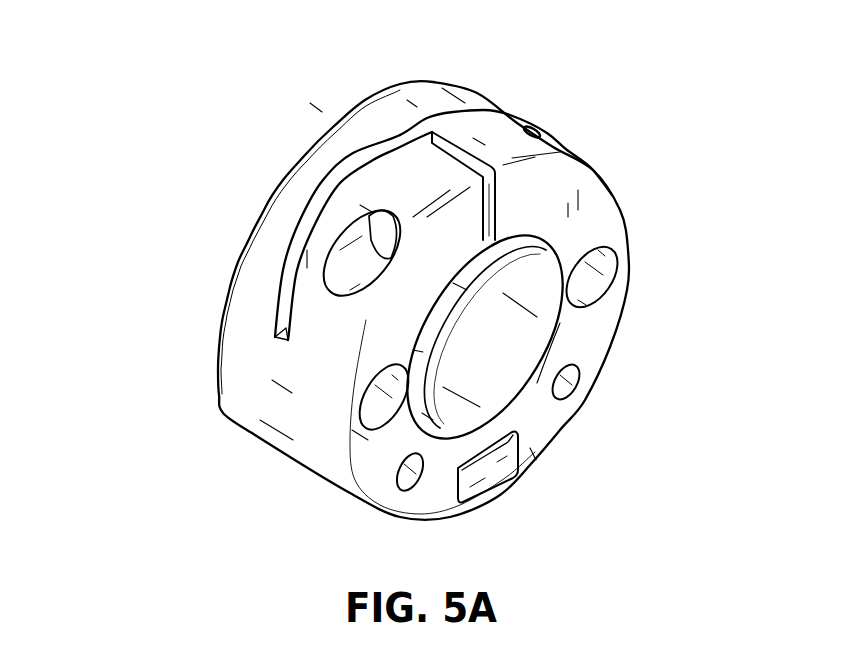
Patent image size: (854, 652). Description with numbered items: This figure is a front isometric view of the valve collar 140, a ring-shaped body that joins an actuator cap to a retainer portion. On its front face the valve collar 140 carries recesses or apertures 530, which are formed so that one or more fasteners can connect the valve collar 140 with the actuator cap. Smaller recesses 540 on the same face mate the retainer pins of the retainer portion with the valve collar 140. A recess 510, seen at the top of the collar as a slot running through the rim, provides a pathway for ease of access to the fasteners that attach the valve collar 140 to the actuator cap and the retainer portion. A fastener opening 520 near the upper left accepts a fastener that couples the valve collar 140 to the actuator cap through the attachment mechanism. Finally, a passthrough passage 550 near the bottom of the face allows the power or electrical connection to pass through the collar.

The valve collar 140 is at (140, 50).
The recess 510 is at (478, 112).
The fastener opening 520 is at (328, 252).
The recesses or apertures 530 is at (362, 387).
The recesses 540 is at (577, 380).
The passthrough passage 550 is at (487, 485).